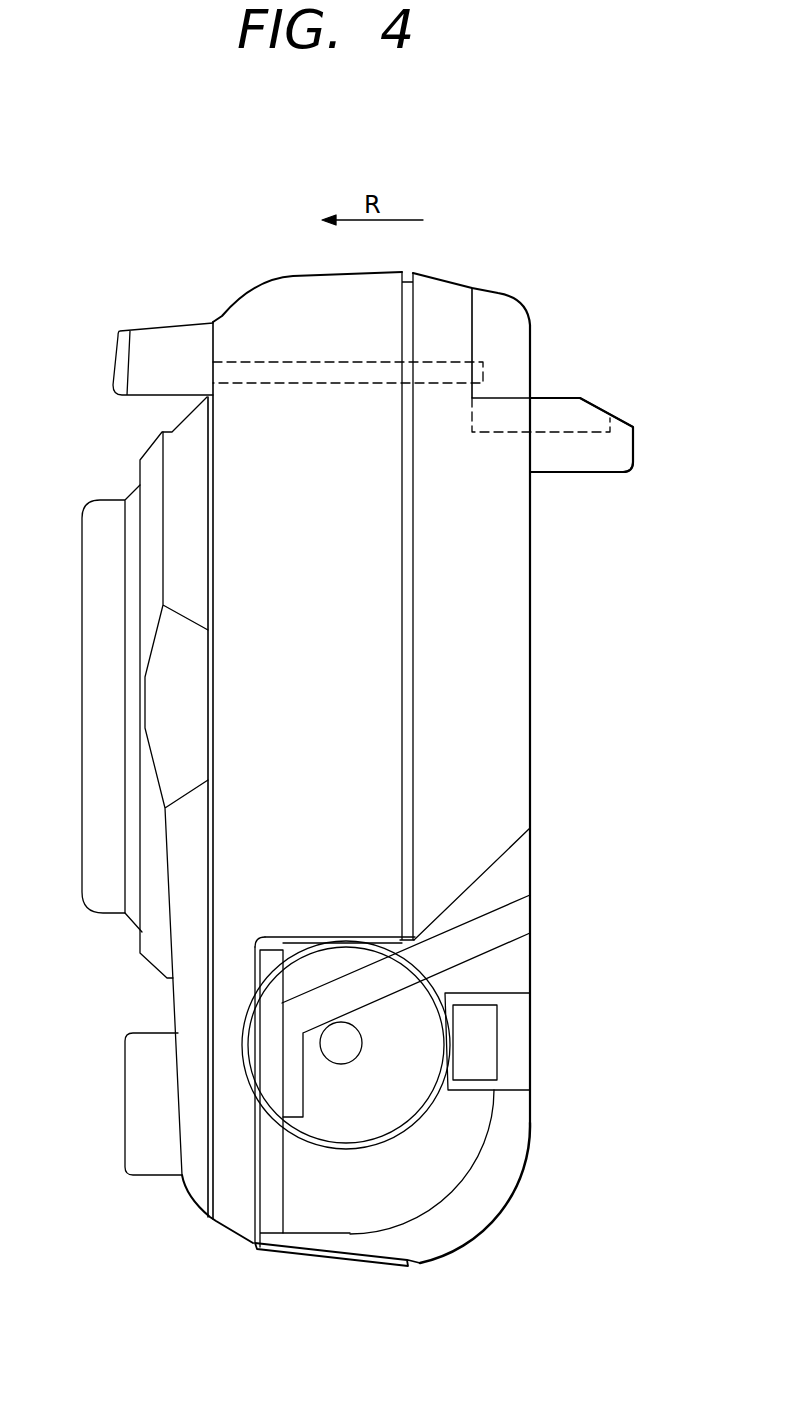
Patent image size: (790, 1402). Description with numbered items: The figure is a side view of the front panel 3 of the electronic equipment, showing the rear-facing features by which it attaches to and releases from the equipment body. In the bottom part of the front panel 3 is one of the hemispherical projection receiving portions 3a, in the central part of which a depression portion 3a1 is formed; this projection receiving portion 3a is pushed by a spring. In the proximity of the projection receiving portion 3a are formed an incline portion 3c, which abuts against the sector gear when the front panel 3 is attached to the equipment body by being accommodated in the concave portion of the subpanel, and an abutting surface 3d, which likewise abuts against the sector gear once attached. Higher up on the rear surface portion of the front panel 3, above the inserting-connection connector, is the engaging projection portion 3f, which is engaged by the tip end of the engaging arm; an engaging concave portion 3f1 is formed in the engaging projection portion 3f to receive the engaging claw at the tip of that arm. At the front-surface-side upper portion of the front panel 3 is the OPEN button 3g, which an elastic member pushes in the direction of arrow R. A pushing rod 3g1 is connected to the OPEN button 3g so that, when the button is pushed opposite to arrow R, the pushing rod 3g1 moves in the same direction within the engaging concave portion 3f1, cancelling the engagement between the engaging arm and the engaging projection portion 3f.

The front panel 3 is at (574, 226).
The OPEN button 3g is at (138, 355).
The pushing rod 3g1 is at (485, 372).
The engaging projection portion 3f is at (633, 442).
The engaging concave portion 3f1 is at (472, 430).
The incline portion 3c is at (502, 858).
The projection receiving portion 3a is at (365, 1110).
The depression portion 3a1 is at (342, 1042).
The abutting surface 3d is at (282, 1150).